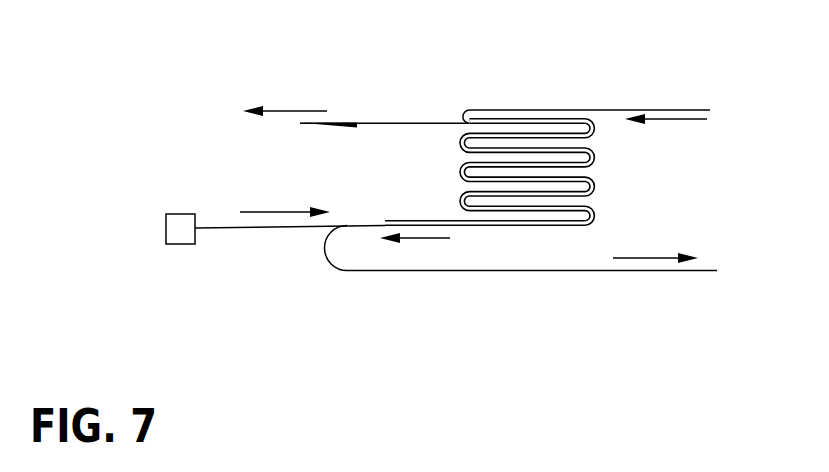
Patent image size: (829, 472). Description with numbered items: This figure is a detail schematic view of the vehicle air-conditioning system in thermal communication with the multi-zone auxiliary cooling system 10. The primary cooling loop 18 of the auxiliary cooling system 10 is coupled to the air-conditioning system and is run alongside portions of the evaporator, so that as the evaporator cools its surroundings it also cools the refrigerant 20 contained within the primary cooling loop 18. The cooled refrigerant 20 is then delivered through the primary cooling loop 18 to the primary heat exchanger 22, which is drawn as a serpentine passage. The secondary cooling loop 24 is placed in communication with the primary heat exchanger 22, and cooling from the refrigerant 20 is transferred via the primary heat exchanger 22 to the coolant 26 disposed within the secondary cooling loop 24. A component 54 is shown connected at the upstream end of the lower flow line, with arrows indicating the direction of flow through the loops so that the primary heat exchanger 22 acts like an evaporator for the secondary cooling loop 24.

The auxiliary cooling system 10 is at (316, 86).
The primary cooling loop 18 is at (357, 127).
The refrigerant 20 is at (322, 128).
The primary heat exchanger 22 is at (475, 84).
The secondary cooling loop 24 is at (653, 87).
The coolant 26 is at (677, 271).
The pump 54 is at (177, 214).